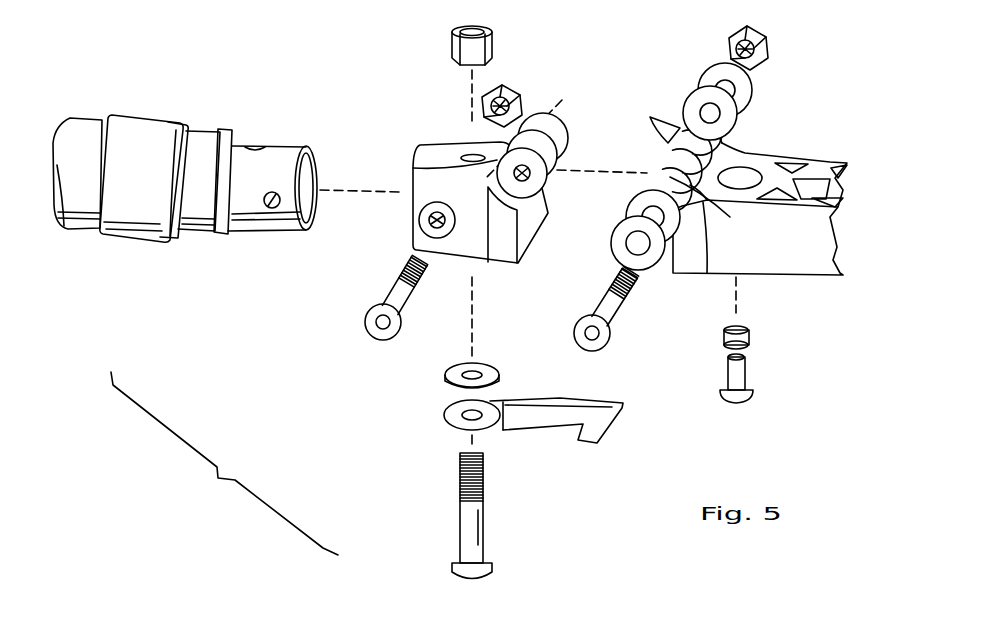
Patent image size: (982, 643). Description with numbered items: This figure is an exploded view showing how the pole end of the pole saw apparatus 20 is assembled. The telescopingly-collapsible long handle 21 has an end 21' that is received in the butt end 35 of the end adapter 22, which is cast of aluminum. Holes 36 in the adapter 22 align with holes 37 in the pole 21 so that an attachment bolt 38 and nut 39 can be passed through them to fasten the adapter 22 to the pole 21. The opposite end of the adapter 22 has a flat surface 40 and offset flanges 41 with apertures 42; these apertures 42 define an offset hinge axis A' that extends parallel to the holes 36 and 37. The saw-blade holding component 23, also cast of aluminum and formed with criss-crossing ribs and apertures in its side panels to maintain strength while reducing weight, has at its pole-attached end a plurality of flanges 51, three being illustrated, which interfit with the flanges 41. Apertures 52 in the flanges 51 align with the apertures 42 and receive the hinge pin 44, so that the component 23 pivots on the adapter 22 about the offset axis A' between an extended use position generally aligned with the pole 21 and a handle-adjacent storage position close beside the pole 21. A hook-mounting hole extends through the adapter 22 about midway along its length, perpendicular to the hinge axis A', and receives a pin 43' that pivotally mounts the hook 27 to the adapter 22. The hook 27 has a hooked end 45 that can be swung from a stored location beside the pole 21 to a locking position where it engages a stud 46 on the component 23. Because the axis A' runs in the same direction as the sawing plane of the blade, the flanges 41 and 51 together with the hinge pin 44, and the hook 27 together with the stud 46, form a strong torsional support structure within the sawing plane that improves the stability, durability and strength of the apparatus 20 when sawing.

The pole saw apparatus 20 is at (224, 463).
The long handle 21 is at (185, 144).
The end of the pole 21' is at (273, 163).
The end adapter 22 is at (418, 145).
The saw-blade holding component 23 is at (800, 158).
The hook 27 is at (545, 432).
The butt end 35 is at (410, 183).
The holes 36 is at (430, 218).
The holes 37 is at (268, 212).
The attachment bolt 38 is at (382, 303).
The nut 39 is at (507, 92).
The flat surface 40 is at (533, 247).
The offset flanges 41 is at (557, 150).
The apertures 42 is at (530, 187).
The pin 43' is at (445, 516).
The hinge pin 44 is at (610, 312).
The hooked end 45 is at (600, 443).
The stud 46 is at (747, 377).
The flanges 51 is at (670, 132).
The apertures 52 is at (707, 240).
The offset hinge axis A' is at (543, 118).